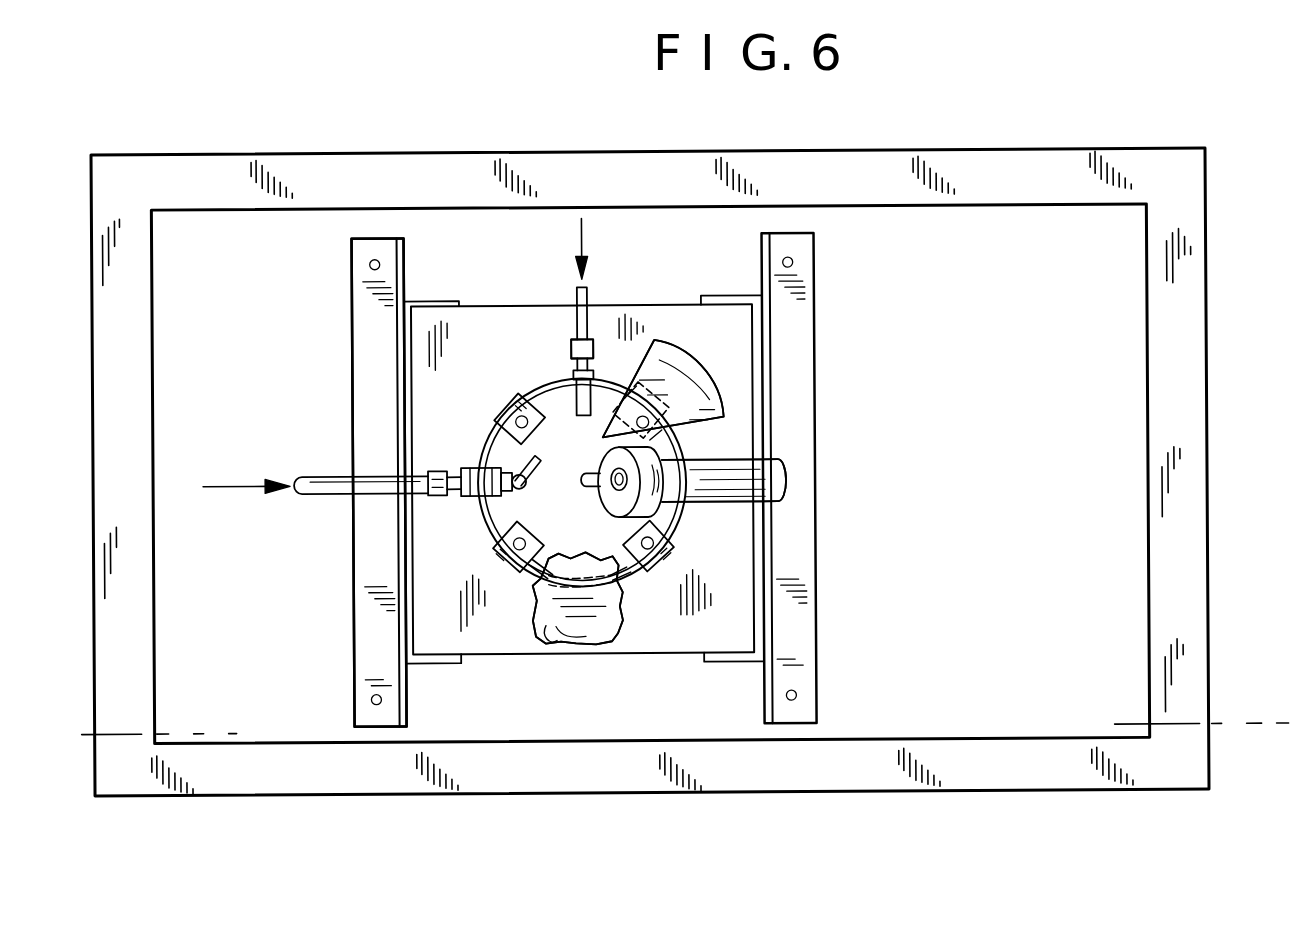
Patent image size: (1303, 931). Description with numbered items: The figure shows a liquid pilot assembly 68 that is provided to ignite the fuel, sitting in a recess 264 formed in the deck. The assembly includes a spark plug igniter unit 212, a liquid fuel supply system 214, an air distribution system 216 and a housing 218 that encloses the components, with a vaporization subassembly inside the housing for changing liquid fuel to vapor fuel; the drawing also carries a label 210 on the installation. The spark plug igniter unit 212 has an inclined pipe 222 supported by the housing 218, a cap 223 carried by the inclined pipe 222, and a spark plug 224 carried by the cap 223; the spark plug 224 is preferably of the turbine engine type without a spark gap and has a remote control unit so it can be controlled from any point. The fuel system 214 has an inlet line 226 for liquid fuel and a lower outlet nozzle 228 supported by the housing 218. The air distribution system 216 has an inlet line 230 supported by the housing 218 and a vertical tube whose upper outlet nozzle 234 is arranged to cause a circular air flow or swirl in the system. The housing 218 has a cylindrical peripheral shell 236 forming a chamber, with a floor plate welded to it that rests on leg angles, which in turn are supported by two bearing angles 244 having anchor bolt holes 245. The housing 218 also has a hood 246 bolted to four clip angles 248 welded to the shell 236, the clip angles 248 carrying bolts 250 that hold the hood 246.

The liquid pilot assembly 68 is at (1115, 126).
The recess 264 is at (1183, 412).
The injector module 210 is at (852, 276).
The spark plug igniter unit 212 is at (762, 473).
The liquid fuel supply system 214 is at (558, 286).
The air distribution system 216 is at (428, 520).
The housing 218 is at (334, 665).
The inclined pipe 222 is at (742, 530).
The cap 223 is at (658, 426).
The spark plug 224 is at (607, 494).
The inlet line 226 is at (590, 300).
The lower outlet nozzle 228 is at (553, 310).
The inlet line 230 is at (385, 470).
The upper outlet nozzle 234 is at (545, 400).
The peripheral shell 236 is at (655, 580).
The bearing angles 244 is at (372, 352).
The anchor bolt holes 245 is at (372, 266).
The hood 246 is at (560, 626).
The clip angles 248 is at (497, 556).
The bolts 250 is at (648, 372).